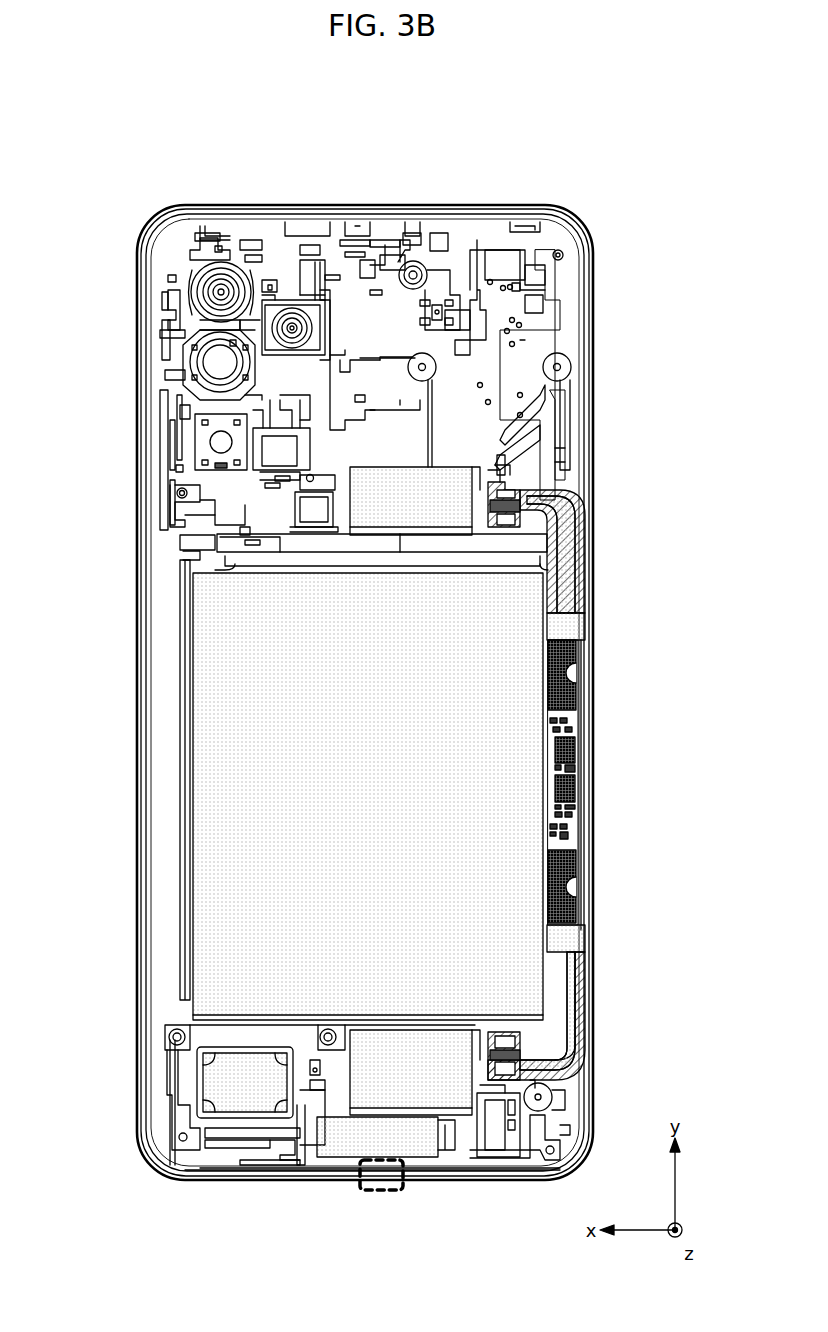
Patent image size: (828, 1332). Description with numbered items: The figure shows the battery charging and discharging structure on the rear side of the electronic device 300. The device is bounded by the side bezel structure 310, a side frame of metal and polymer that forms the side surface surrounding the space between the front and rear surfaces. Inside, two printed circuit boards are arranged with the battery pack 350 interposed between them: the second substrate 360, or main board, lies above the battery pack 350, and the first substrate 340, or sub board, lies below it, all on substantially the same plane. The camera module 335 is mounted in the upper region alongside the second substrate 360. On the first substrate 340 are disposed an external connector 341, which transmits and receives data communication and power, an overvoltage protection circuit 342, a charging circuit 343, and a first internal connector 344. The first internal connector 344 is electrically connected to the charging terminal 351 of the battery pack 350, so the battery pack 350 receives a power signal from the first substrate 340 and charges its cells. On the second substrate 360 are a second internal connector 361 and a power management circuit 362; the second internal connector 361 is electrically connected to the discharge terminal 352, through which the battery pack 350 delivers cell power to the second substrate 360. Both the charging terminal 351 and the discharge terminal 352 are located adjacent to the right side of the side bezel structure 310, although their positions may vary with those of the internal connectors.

The electronic device 300 is at (117, 163).
The side bezel structure 310 is at (597, 817).
The camera module 335 is at (220, 365).
The first substrate 340 is at (180, 1095).
The external connector 341 is at (370, 1192).
The overvoltage protection circuit 342 is at (320, 1152).
The charging circuit 343 is at (430, 1095).
The first internal connector 344 is at (503, 1062).
The battery pack 350 is at (212, 783).
The charging terminal 351 is at (577, 932).
The discharge terminal 352 is at (575, 614).
The second substrate 360 is at (538, 341).
The second internal connector 361 is at (516, 497).
The power management circuit 362 is at (452, 483).